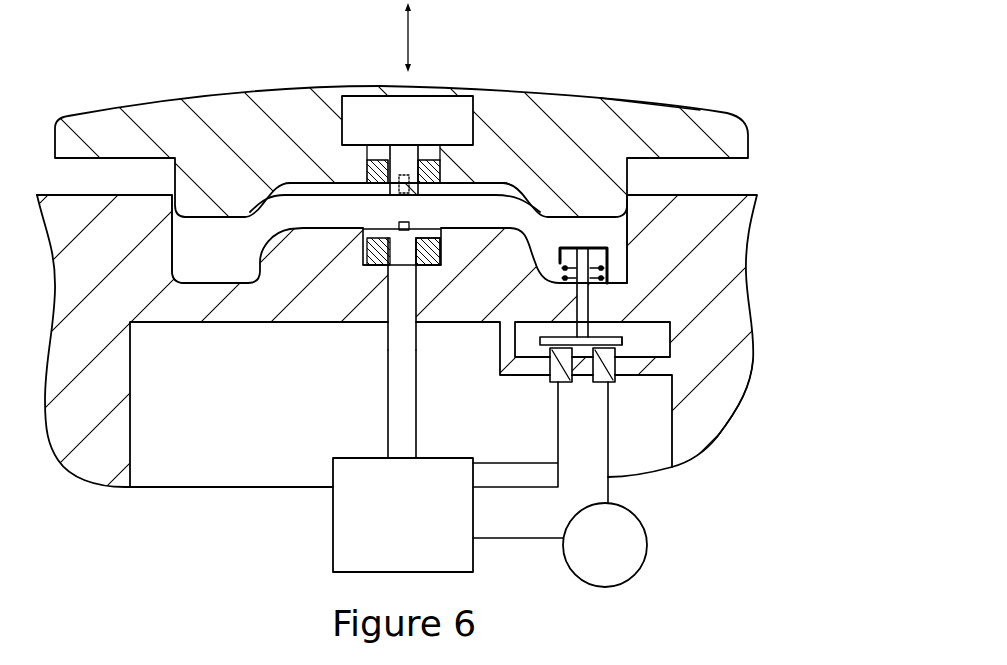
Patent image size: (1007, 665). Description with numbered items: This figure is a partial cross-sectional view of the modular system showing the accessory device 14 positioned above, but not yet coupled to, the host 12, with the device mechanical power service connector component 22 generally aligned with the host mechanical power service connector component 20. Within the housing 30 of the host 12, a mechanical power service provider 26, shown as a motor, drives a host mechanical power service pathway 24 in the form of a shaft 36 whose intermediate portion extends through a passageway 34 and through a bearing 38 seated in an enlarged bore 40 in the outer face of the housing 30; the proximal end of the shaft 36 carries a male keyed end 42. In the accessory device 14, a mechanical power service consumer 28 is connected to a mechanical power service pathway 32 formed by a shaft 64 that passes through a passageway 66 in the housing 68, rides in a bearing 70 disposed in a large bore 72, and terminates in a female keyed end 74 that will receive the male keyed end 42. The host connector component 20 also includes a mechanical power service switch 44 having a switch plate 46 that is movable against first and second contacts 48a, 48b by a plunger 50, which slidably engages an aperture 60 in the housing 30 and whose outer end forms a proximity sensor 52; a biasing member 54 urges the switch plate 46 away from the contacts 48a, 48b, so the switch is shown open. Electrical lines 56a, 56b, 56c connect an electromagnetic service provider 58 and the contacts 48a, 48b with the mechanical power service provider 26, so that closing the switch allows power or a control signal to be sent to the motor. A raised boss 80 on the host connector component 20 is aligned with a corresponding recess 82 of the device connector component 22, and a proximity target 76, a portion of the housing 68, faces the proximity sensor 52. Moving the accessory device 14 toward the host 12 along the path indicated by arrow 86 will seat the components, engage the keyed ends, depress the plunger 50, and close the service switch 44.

The host 12 is at (752, 252).
The accessory device 14 is at (172, 94).
The host mechanical power service connector component 20 is at (464, 155).
The device mechanical power service connector component 22 is at (339, 207).
The host mechanical power service pathway 24 is at (378, 369).
The mechanical power service provider 26 is at (333, 540).
The mechanical power service consumer 28 is at (362, 94).
The housing 30 is at (627, 343).
The mechanical power service pathway 32 is at (506, 155).
The passageway 34 is at (395, 318).
The shaft 36 is at (388, 406).
The bearing 38 is at (428, 266).
The enlarged bore 40 is at (367, 266).
The male keyed end 42 is at (431, 217).
The mechanical power service switch 44 is at (579, 228).
The switch plate 46 is at (740, 407).
The first contact 48a is at (617, 366).
The second contact 48b is at (550, 364).
The plunger 50 is at (576, 310).
The proximity sensor 52 is at (608, 256).
The biasing member 54 is at (590, 290).
The electrical line 56a is at (612, 464).
The electrical line 56b is at (517, 540).
The electrical line 56c is at (510, 474).
The electromagnetic service provider 58 is at (648, 550).
The aperture 60 is at (600, 300).
The shaft 64 is at (367, 160).
The passageway 66 is at (414, 170).
The housing 68 is at (570, 100).
The bearing 70 is at (367, 182).
The large bore 72 is at (421, 160).
The female keyed end 74 is at (400, 196).
The proximity target 76 is at (610, 243).
The raised boss 80 is at (292, 226).
The recess 82 is at (497, 224).
The arrow 86 is at (408, 40).